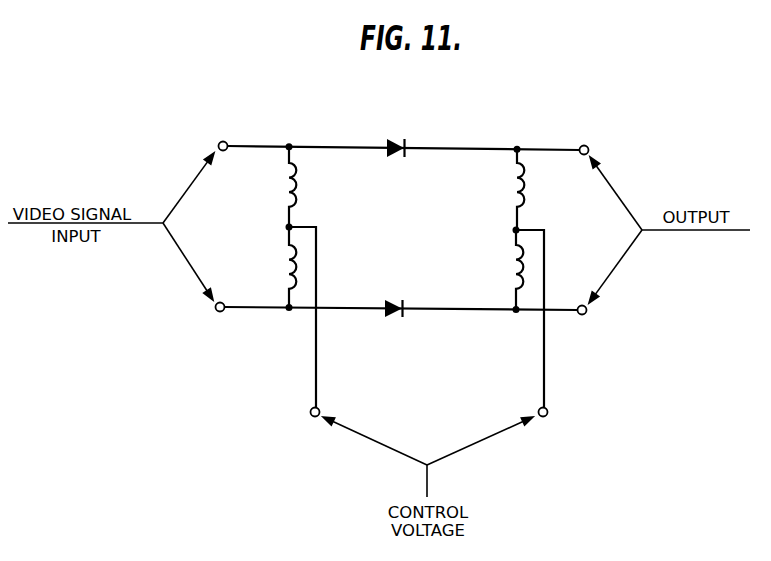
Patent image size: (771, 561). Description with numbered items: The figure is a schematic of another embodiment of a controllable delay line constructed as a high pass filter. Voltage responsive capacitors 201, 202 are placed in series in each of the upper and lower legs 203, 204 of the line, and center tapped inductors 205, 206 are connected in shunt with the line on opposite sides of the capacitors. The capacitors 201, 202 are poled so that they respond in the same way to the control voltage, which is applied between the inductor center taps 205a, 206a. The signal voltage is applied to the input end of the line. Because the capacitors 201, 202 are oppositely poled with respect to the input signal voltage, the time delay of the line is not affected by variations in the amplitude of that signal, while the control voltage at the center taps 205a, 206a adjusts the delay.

The voltage responsive capacitor 201 is at (396, 138).
The voltage responsive capacitor 202 is at (396, 300).
The upper leg 203 is at (332, 145).
The lower leg 204 is at (338, 305).
The center tapped inductor 205 is at (306, 209).
The inductor center tap 205a is at (285, 227).
The center tapped inductor 206 is at (500, 216).
The inductor center tap 206a is at (519, 228).